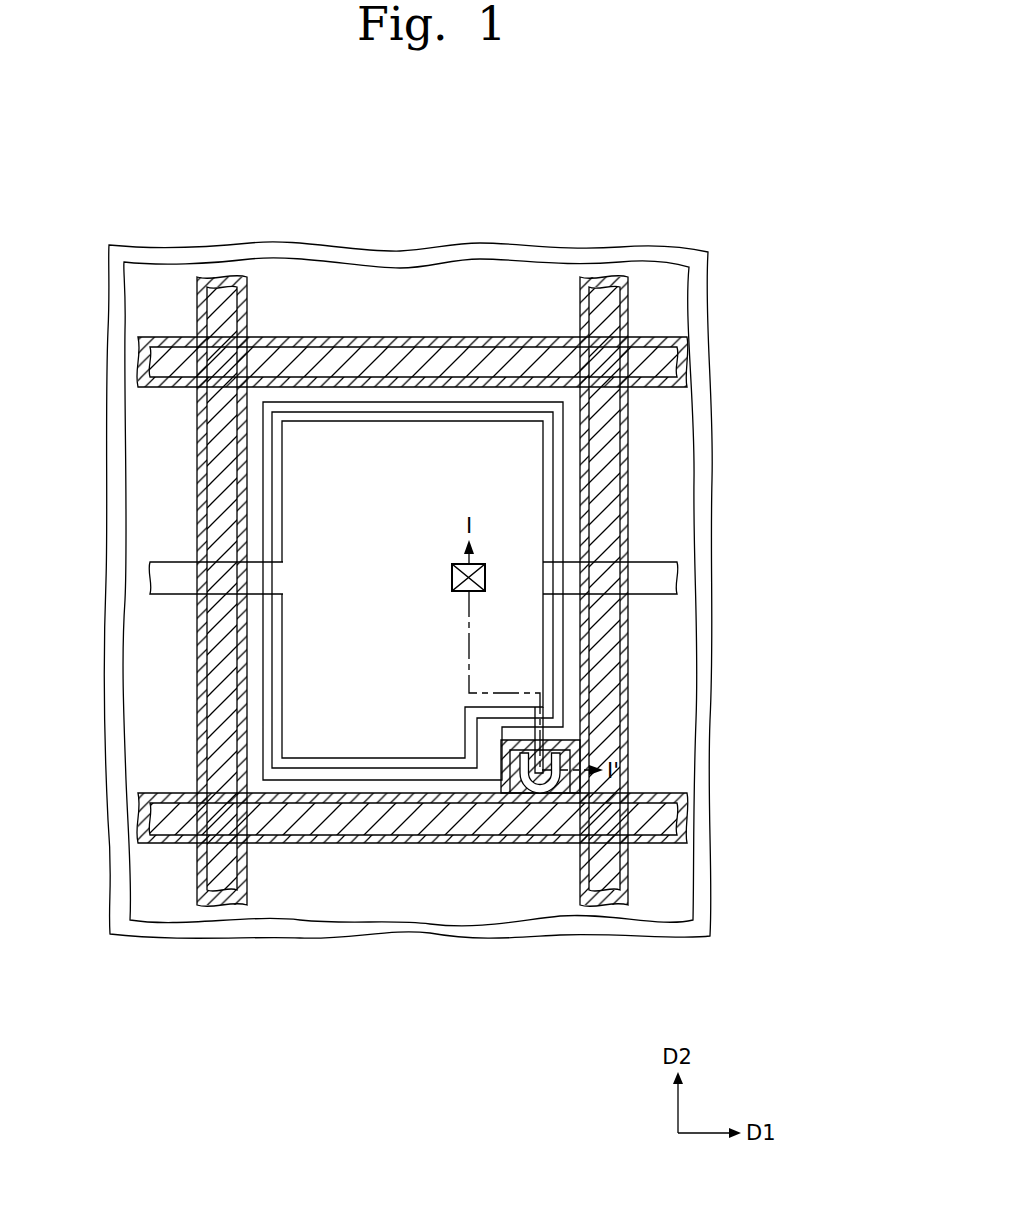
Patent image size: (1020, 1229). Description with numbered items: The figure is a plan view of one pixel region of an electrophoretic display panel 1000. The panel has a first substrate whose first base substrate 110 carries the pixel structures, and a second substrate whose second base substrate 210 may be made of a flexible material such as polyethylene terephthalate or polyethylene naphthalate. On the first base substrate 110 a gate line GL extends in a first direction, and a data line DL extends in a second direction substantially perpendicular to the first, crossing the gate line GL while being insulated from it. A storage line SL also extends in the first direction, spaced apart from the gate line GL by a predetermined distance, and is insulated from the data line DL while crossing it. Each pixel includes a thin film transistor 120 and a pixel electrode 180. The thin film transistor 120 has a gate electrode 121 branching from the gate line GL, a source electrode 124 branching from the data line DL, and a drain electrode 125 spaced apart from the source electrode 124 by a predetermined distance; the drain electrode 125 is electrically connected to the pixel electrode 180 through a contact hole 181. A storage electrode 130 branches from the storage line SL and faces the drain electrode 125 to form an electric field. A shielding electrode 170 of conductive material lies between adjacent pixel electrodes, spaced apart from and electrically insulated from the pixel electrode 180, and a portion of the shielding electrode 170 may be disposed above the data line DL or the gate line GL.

The electrophoretic display panel 1000 is at (681, 132).
The first base substrate 110 is at (697, 270).
The second base substrate 210 is at (673, 311).
The shielding electrode 170 is at (322, 838).
The gate line GL is at (688, 357).
The data line DL is at (215, 290).
The storage line SL is at (668, 575).
The pixel electrode 180 is at (560, 432).
The storage electrode 130 is at (525, 492).
The contact hole 181 is at (485, 577).
The thin film transistor 120 is at (600, 853).
The gate electrode 121 is at (515, 792).
The source electrode 124 is at (545, 792).
The drain electrode 125 is at (535, 792).